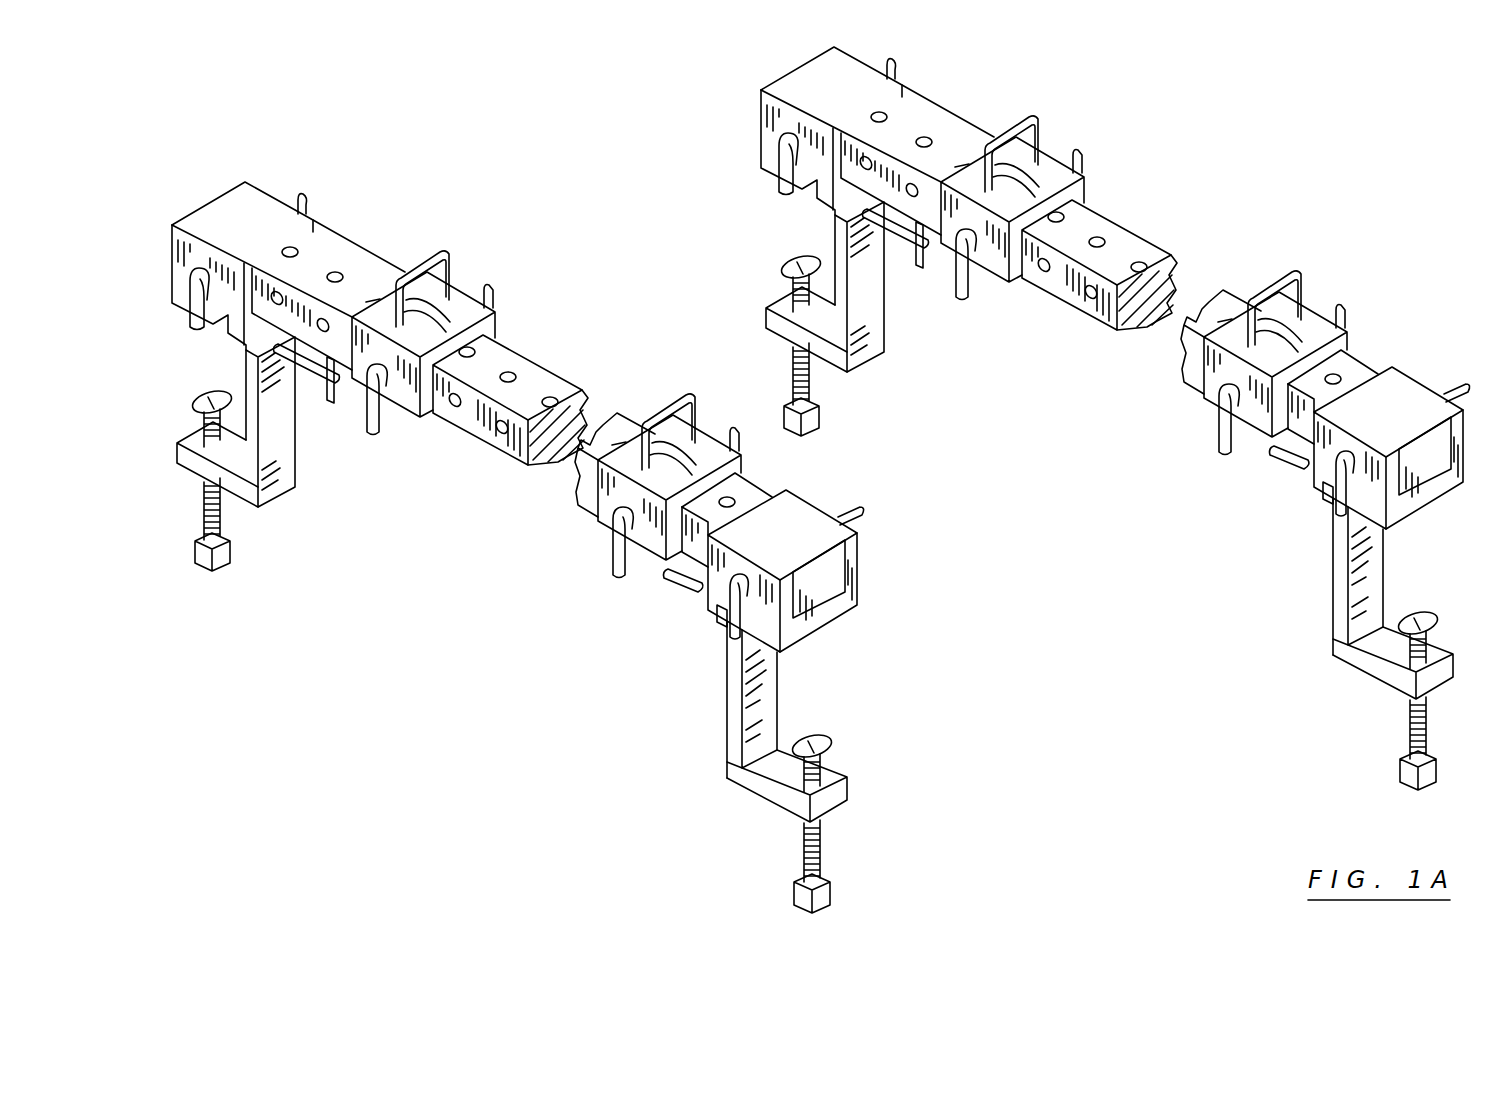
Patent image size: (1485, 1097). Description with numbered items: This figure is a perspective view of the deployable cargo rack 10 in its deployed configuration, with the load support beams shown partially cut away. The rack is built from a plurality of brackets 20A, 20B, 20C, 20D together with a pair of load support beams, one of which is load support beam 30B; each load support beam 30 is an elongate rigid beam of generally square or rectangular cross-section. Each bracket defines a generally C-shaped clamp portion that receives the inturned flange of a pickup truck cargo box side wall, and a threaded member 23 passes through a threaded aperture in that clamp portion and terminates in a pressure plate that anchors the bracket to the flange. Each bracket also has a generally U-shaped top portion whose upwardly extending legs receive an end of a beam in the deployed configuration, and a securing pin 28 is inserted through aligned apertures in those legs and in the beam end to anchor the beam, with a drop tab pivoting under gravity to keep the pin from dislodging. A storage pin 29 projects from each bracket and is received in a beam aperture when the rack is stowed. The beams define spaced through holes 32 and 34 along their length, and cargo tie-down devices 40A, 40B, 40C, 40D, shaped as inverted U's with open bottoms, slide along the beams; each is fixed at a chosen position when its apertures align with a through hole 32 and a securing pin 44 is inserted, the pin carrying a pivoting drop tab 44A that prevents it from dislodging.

The deployable cargo rack 10 is at (379, 730).
The bracket 20A is at (290, 475).
The bracket 20B is at (739, 97).
The bracket 20C is at (727, 728).
The bracket 20D is at (1333, 605).
The threaded member 23 is at (217, 520).
The securing pin 28 is at (193, 327).
The storage pin 29 is at (300, 363).
The load support beam 30 is at (327, 255).
The load support beam 30B is at (1145, 247).
The through hole 32 is at (457, 407).
The through hole 34 is at (553, 402).
The cargo tie-down device 40A is at (483, 330).
The cargo tie-down device 40B is at (737, 468).
The cargo tie-down device 40C is at (1063, 222).
The cargo tie-down device 40D is at (1319, 316).
The securing pin 44 is at (973, 297).
The pivoting drop tab 44A is at (1087, 168).